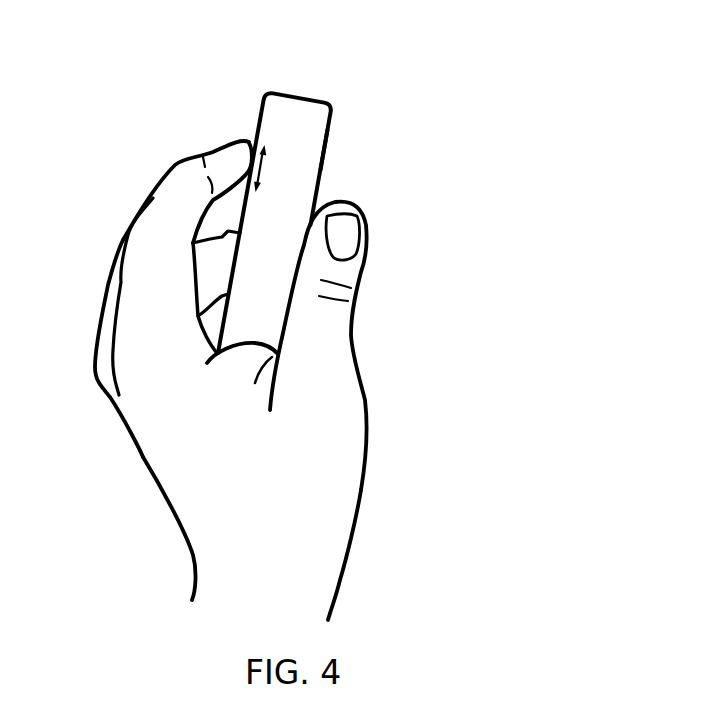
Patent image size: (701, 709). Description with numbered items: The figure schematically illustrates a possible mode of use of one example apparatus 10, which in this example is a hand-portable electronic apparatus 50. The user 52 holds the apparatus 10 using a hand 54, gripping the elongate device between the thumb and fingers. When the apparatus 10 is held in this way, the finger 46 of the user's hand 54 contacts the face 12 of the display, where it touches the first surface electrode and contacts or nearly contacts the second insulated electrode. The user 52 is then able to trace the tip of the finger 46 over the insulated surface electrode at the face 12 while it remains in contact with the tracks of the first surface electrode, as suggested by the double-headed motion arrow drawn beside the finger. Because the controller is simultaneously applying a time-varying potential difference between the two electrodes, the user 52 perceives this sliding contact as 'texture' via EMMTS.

The apparatus 10 is at (313, 100).
The face 12 is at (250, 143).
The finger 46 is at (205, 155).
The hand-portable electronic apparatus 50 is at (334, 155).
The user 52 is at (416, 379).
The hand 54 is at (343, 565).